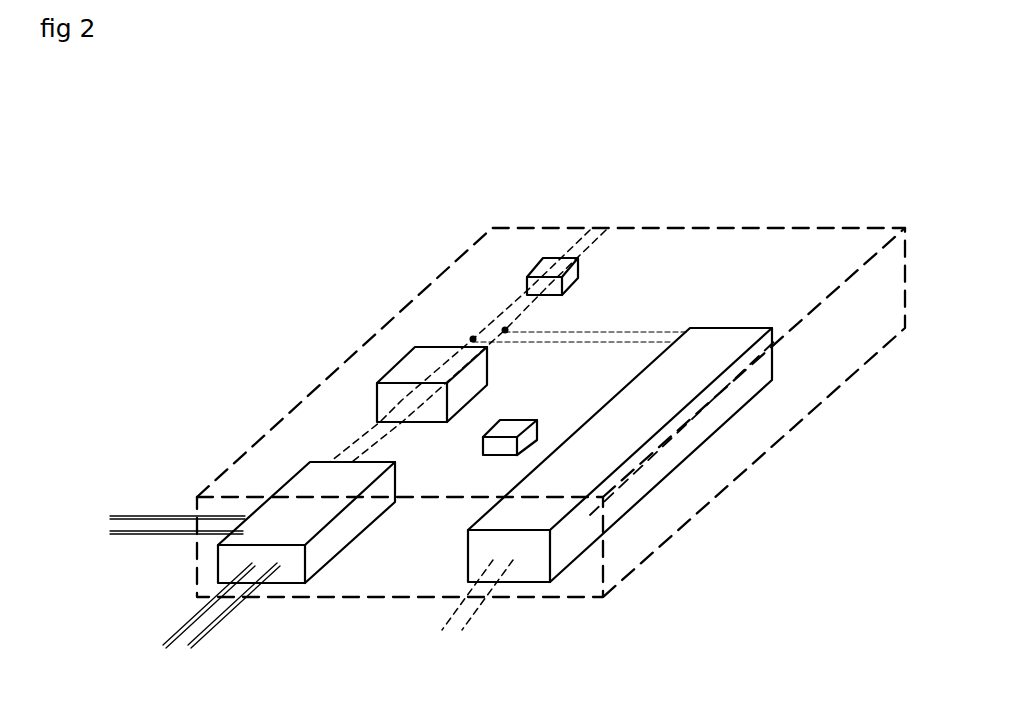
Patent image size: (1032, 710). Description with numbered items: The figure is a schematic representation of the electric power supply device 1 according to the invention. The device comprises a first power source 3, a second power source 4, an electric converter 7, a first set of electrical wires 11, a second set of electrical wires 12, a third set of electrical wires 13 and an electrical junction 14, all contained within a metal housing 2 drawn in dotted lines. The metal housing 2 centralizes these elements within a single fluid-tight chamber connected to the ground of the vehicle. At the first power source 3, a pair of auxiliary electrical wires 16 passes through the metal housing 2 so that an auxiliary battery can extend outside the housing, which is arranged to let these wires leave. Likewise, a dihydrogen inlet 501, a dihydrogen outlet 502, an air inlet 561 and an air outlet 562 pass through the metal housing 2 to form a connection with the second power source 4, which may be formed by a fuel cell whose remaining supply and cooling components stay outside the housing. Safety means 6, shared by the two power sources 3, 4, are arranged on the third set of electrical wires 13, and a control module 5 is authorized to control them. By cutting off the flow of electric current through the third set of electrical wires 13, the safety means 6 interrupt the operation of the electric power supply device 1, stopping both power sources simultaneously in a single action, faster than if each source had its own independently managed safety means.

The electric power supply device 1 is at (622, 202).
The metal housing 2 is at (766, 466).
The first power source 3 is at (735, 328).
The second power source 4 is at (288, 481).
The control module 5 is at (523, 445).
The safety means 6 is at (543, 258).
The electric converter 7 is at (396, 364).
The first set of electrical wires 11 is at (600, 335).
The second set of electrical wires 12 is at (345, 440).
The third set of electrical wires 13 is at (518, 298).
The electrical junction 14 is at (468, 338).
The pair of auxiliary electrical wires 16 is at (475, 613).
The dihydrogen inlet 501 is at (113, 534).
The dihydrogen outlet 502 is at (113, 516).
The air inlet 561 is at (212, 623).
The air outlet 562 is at (175, 633).